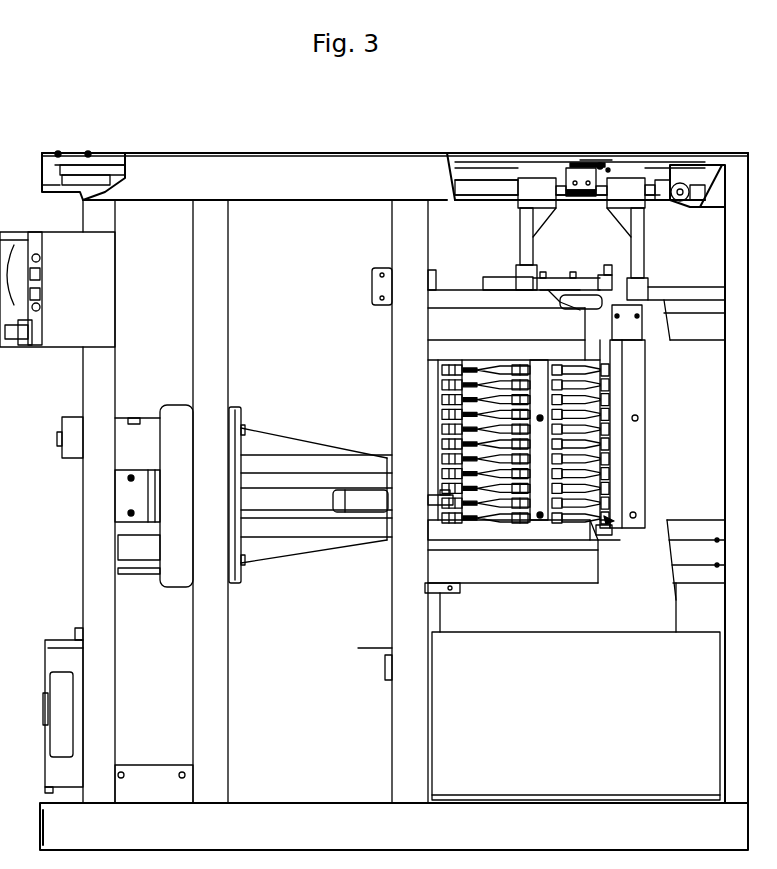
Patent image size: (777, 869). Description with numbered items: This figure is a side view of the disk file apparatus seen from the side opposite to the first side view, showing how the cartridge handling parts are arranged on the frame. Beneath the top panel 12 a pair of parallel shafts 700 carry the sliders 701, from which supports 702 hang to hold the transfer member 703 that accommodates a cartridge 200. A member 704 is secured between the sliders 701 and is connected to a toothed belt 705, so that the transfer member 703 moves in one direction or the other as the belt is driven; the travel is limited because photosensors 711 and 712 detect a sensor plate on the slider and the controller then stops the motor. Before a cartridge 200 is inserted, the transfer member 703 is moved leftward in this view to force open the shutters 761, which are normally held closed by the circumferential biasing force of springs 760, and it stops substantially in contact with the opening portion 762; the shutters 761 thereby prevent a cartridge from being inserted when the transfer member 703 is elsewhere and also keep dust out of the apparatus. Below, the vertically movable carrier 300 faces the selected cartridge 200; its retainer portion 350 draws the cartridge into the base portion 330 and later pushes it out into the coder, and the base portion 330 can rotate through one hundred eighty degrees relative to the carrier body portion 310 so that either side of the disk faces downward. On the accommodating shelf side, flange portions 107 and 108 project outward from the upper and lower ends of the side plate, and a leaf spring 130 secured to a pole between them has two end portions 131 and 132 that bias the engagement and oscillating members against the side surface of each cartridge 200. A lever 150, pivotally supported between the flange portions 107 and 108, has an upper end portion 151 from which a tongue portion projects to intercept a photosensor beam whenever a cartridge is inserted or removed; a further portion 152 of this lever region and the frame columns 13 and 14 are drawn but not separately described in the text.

The top panel 12 is at (553, 150).
The frame column 13 is at (222, 722).
The frame column 14 is at (108, 722).
The flange portion 107 is at (590, 318).
The flange portion 108 is at (612, 537).
The leaf spring 130 is at (555, 372).
The end portion of leaf spring 131 is at (605, 372).
The end portion of leaf spring 132 is at (500, 372).
The lever 150 is at (615, 418).
The upper end portion of lever 151 is at (612, 322).
The lower bracket 152 is at (612, 518).
The cartridge 200 is at (432, 370).
The carrier 300 is at (242, 402).
The carrier body portion 310 is at (173, 548).
The base portion 330 is at (268, 446).
The retainer portion 350 is at (432, 510).
The parallel shafts 700 is at (497, 195).
The sliders 701 is at (537, 190).
The supports 702 is at (520, 235).
The transfer member 703 is at (497, 283).
The member 704 is at (567, 165).
The toothed belt 705 is at (465, 178).
The photosensor 711 is at (585, 160).
The photosensor 712 is at (112, 165).
The springs 760 is at (45, 252).
The shutters 761 is at (45, 276).
The opening portion 762 is at (28, 345).